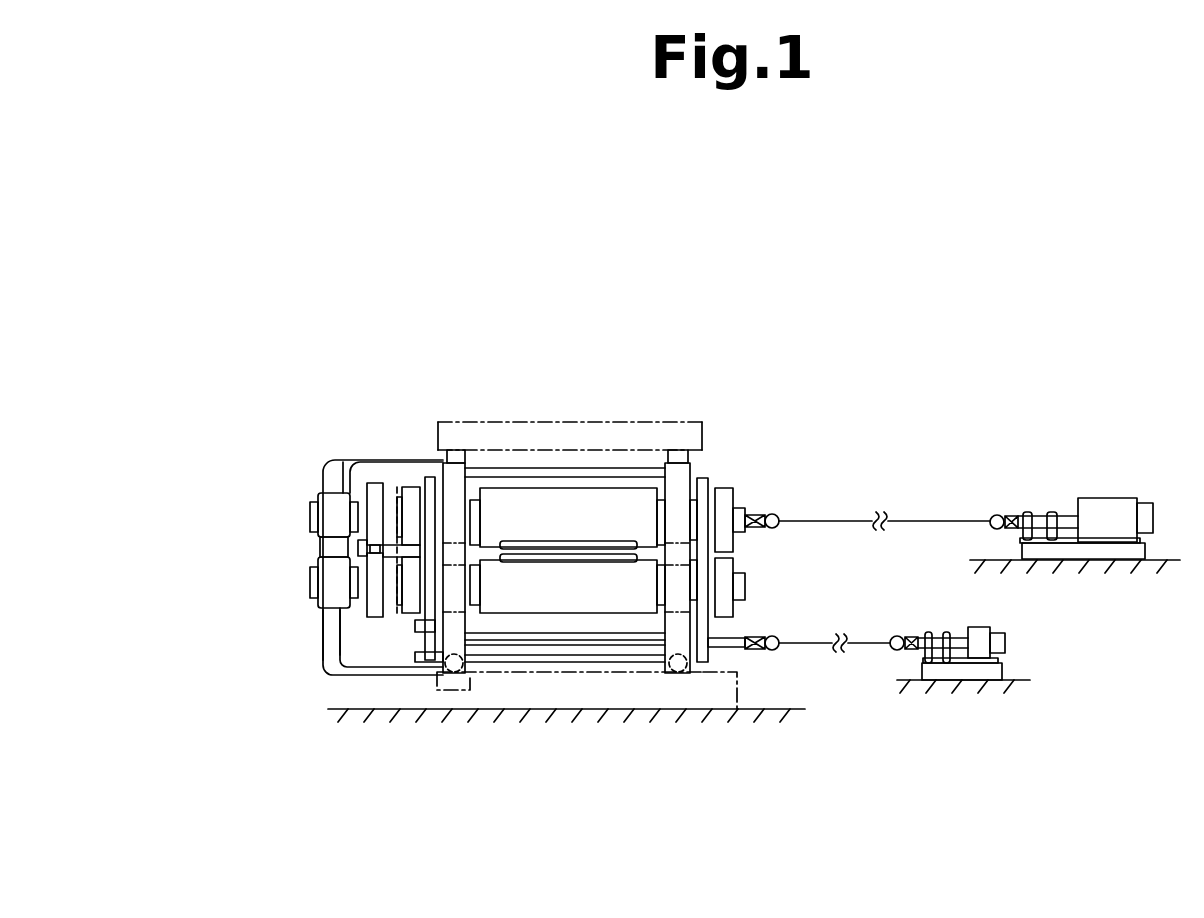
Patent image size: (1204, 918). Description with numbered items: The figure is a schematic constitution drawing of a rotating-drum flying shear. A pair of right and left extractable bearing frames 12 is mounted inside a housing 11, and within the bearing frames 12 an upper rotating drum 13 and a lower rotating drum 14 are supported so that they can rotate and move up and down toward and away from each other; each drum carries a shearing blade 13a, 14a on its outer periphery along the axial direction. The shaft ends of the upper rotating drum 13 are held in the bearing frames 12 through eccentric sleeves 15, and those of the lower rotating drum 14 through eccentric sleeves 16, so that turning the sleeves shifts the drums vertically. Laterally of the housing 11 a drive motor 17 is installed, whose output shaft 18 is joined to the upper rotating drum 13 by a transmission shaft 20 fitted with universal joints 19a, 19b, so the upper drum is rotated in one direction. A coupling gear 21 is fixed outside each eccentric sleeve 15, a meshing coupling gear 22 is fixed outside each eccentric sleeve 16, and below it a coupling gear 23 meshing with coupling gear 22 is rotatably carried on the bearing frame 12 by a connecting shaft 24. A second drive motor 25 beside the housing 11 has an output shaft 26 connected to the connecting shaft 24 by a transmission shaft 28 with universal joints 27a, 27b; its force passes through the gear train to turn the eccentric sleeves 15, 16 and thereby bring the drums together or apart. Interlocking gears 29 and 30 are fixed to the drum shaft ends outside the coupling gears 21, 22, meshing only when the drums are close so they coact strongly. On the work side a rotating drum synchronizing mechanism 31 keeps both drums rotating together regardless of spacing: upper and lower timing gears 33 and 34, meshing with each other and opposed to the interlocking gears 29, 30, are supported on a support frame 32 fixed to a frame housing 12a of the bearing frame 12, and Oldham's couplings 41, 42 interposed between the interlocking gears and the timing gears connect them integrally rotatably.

The housing 11 is at (656, 421).
The bearing frame 12 is at (453, 477).
The frame housing 12a is at (350, 462).
The upper rotating drum 13 is at (528, 507).
The shearing blade 13a is at (541, 546).
The lower rotating drum 14 is at (612, 592).
The shearing blade 14a is at (550, 560).
The eccentric sleeve 15 is at (483, 470).
The eccentric sleeve 16 is at (478, 610).
The drive motor 17 is at (1105, 508).
The output shaft 18 is at (1040, 512).
The universal joint 19a is at (768, 513).
The universal joint 19b is at (1008, 516).
The transmission shaft 20 is at (920, 521).
The coupling gear 21 is at (428, 476).
The coupling gear 22 is at (420, 620).
The coupling gear 23 is at (455, 677).
The connecting shaft 24 is at (578, 641).
The drive motor 25 is at (985, 627).
The output shaft 26 is at (965, 652).
The universal joint 27a is at (757, 648).
The universal joint 27b is at (912, 650).
The transmission shaft 28 is at (872, 645).
The interlocking gear 29 is at (410, 486).
The interlocking gear 30 is at (410, 600).
The rotating drum synchronizing mechanism 31 is at (285, 523).
The support frame 32 is at (332, 617).
The timing gear 33 is at (367, 492).
The timing gear 34 is at (340, 610).
The Oldham's coupling 41 is at (397, 474).
The Oldham's coupling 42 is at (378, 665).